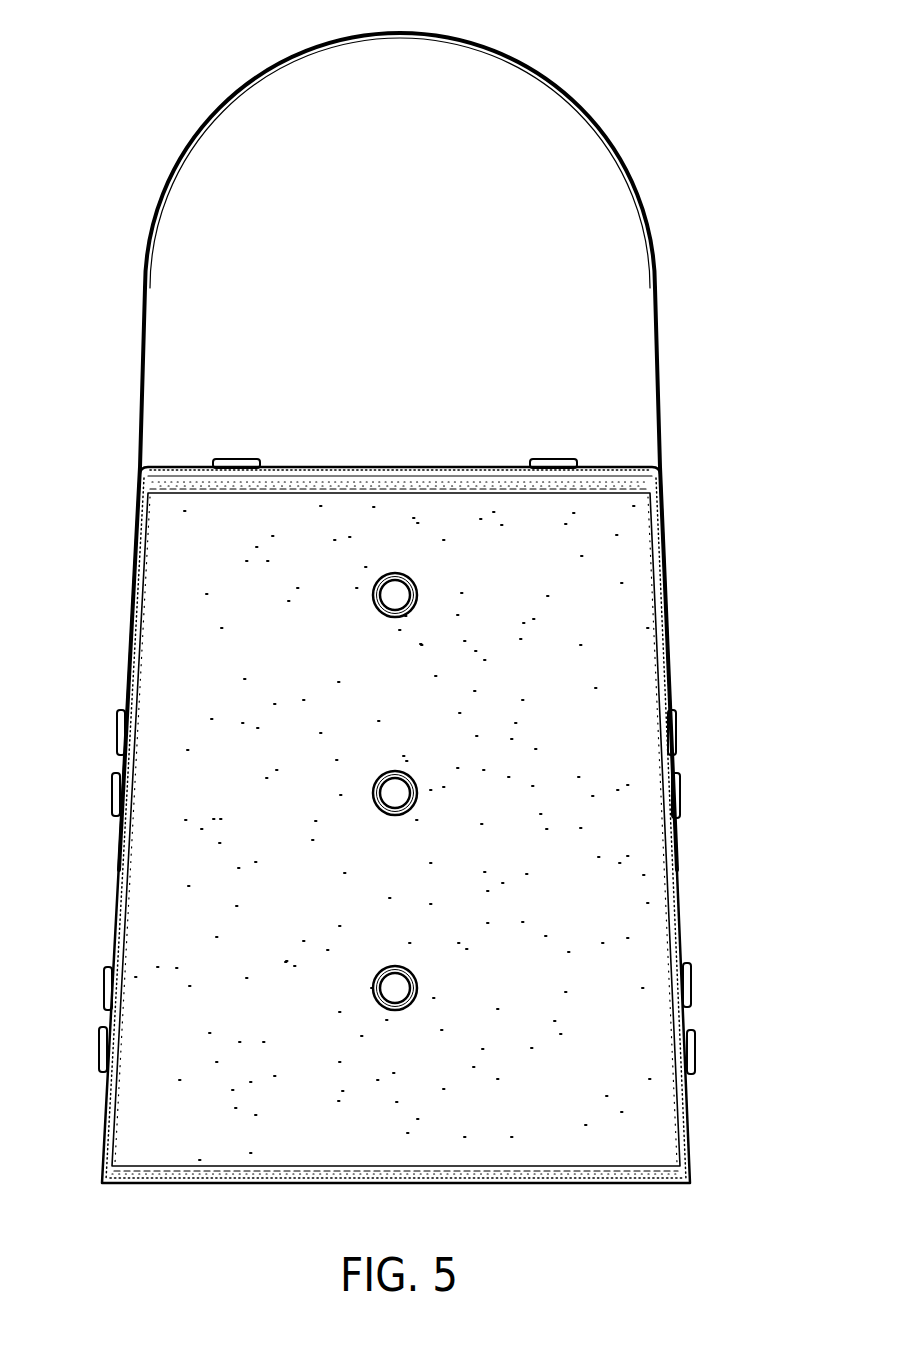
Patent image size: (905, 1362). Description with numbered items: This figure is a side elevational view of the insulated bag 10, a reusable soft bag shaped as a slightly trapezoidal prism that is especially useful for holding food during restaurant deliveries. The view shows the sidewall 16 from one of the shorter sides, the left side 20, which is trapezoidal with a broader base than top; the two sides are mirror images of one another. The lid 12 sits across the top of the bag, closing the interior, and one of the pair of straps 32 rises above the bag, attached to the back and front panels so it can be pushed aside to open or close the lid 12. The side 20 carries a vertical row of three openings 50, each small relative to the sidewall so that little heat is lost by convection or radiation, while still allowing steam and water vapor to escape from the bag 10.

The insulated bag 10 is at (108, 77).
The lid 12 is at (418, 459).
The sidewall 16 is at (165, 693).
The left side 20 is at (168, 913).
The straps 32 is at (491, 50).
The openings 50 is at (241, 459).